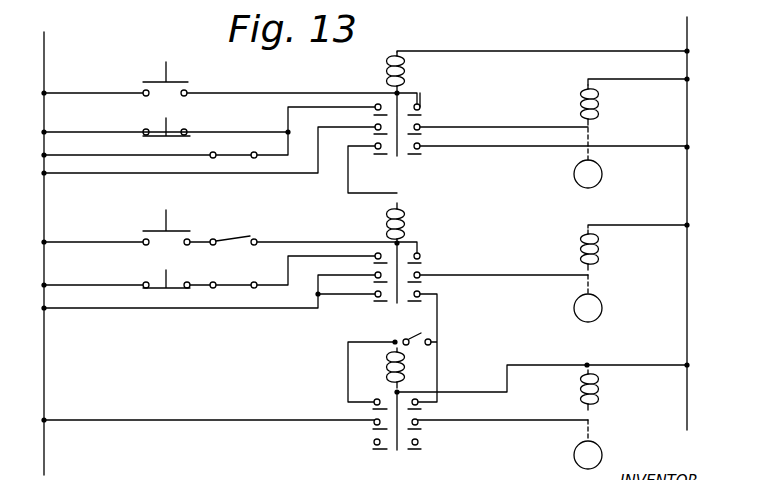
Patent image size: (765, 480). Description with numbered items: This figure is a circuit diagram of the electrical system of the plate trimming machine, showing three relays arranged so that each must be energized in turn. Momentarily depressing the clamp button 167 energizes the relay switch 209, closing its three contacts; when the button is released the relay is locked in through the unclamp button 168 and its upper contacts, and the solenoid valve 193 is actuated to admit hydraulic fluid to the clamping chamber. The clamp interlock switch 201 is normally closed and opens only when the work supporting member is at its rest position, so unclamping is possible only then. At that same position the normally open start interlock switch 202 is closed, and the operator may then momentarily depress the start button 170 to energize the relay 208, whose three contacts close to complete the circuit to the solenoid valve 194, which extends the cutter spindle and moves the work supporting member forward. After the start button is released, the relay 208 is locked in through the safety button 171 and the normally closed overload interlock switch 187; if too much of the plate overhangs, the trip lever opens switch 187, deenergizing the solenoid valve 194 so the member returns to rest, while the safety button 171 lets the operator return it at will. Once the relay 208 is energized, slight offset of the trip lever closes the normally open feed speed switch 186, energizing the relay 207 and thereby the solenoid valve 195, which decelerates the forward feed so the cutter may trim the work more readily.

The clamp button 167 is at (160, 82).
The unclamp button 168 is at (155, 135).
The start button 170 is at (158, 231).
The safety button 171 is at (156, 288).
The clamp interlock switch 201 is at (236, 158).
The start interlock switch 202 is at (234, 239).
The overload interlock switch 187 is at (236, 288).
The feed speed switch 186 is at (420, 336).
The relay switch 209 is at (419, 84).
The relay 208 is at (417, 220).
The relay 207 is at (375, 363).
The solenoid valve 193 is at (600, 182).
The solenoid valve 194 is at (600, 316).
The solenoid valve 195 is at (602, 455).